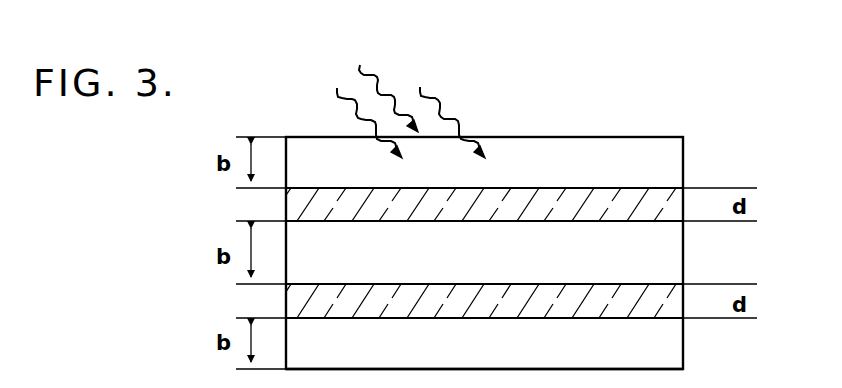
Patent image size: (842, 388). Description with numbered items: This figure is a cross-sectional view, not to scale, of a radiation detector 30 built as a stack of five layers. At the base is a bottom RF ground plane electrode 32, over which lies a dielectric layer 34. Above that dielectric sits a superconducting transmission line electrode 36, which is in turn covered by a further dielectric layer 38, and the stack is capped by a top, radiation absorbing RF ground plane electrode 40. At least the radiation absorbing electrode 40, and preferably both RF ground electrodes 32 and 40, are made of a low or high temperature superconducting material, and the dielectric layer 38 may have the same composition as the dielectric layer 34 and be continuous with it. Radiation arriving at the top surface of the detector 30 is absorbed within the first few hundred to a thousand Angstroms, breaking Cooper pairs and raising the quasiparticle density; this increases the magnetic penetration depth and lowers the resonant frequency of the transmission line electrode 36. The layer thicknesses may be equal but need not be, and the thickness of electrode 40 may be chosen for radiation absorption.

The radiation detector 30 is at (697, 121).
The bottom RF ground plane electrode 32 is at (683, 343).
The dielectric layer 34 is at (286, 305).
The superconducting transmission line electrode 36 is at (683, 262).
The dielectric layer 38 is at (286, 210).
The top radiation absorbing RF ground plane electrode 40 is at (683, 158).